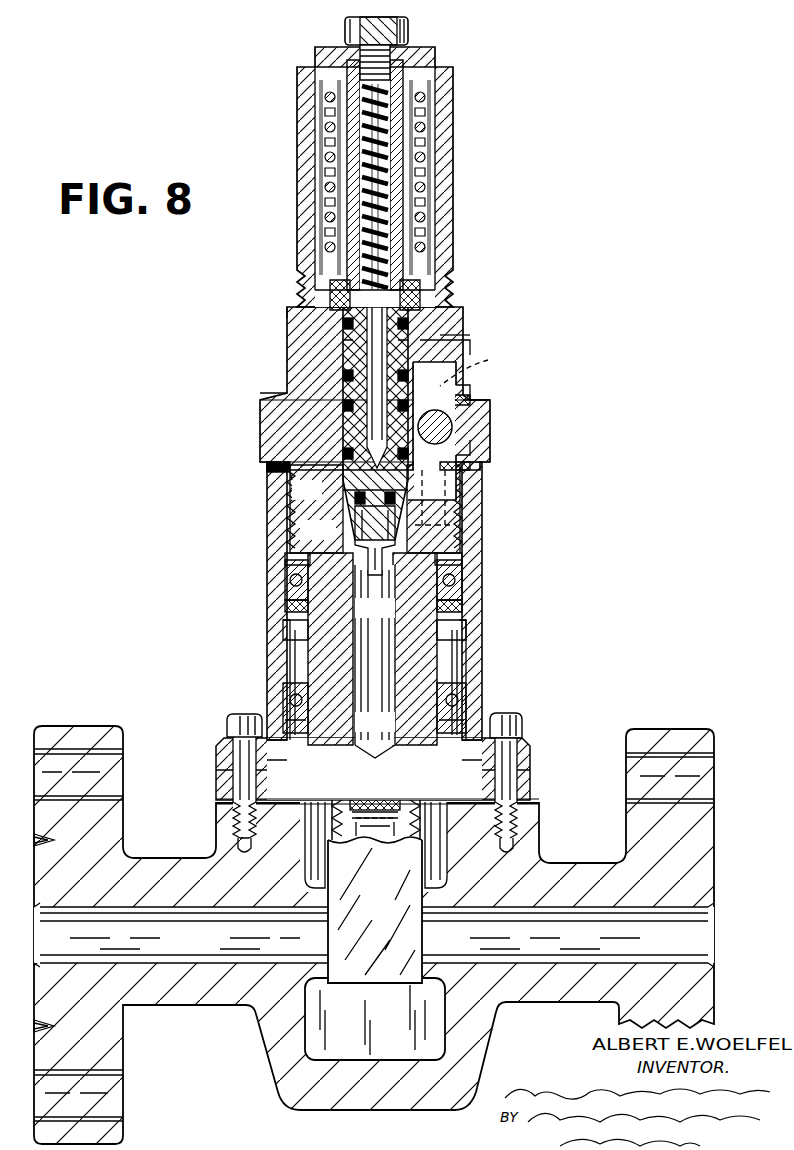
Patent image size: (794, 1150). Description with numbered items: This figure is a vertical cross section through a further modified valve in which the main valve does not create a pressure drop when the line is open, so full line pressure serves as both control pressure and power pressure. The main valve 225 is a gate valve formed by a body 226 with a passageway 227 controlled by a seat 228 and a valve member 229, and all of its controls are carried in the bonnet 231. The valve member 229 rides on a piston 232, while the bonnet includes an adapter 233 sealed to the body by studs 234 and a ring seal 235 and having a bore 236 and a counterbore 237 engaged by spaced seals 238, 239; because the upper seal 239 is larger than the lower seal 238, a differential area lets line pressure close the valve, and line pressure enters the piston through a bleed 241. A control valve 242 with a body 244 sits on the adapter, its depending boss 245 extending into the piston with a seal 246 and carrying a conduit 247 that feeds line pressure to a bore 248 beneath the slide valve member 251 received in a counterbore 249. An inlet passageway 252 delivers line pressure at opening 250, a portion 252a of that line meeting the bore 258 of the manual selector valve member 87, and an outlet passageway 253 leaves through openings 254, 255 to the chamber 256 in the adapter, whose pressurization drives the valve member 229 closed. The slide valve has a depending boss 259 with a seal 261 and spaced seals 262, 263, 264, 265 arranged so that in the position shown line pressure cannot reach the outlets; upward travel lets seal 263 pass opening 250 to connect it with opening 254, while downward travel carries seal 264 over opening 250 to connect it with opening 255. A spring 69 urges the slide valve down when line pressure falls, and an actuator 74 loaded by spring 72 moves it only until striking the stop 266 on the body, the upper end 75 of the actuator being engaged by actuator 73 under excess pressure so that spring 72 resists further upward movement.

The spring 69 is at (385, 206).
The spring 72 is at (422, 122).
The actuator 73 is at (455, 86).
The actuator 74 is at (405, 162).
The upper end of actuator 75 is at (410, 42).
The manual selector valve member 87 is at (452, 428).
The main valve 225 is at (594, 720).
The body 226 is at (508, 996).
The passageway 227 is at (636, 948).
The seat 228 is at (460, 882).
The valve member 229 is at (372, 870).
The bonnet 231 is at (511, 575).
The piston 232 is at (470, 632).
The adapter 233 is at (472, 606).
The studs 234 is at (506, 716).
The ring seal 235 is at (505, 790).
The bore 236 is at (455, 760).
The counterbore 237 is at (458, 650).
The seal 238 is at (452, 692).
The seal 239 is at (365, 658).
The bleed 241 is at (404, 724).
The control valve 242 is at (433, 356).
The body 244 is at (476, 446).
The depending boss 245 is at (375, 661).
The seal 246 is at (400, 575).
The conduit 247 is at (352, 536).
The bore 248 is at (375, 509).
The counterbore 249 is at (302, 356).
The opening 250 is at (484, 345).
The slide valve member 251 is at (410, 332).
The inlet passageway 252 is at (466, 425).
The portion of line 252a is at (462, 478).
The outlet passageway 253 is at (476, 464).
The opening 254 is at (482, 520).
The opening 255 is at (455, 332).
The chamber 256 is at (470, 542).
The bore 258 is at (462, 410).
The depending boss 259 is at (272, 474).
The seal 261 is at (290, 486).
The seal 262 is at (287, 444).
The seal 263 is at (292, 420).
The seal 264 is at (300, 370).
The seal 265 is at (290, 308).
The stop 266 is at (450, 264).